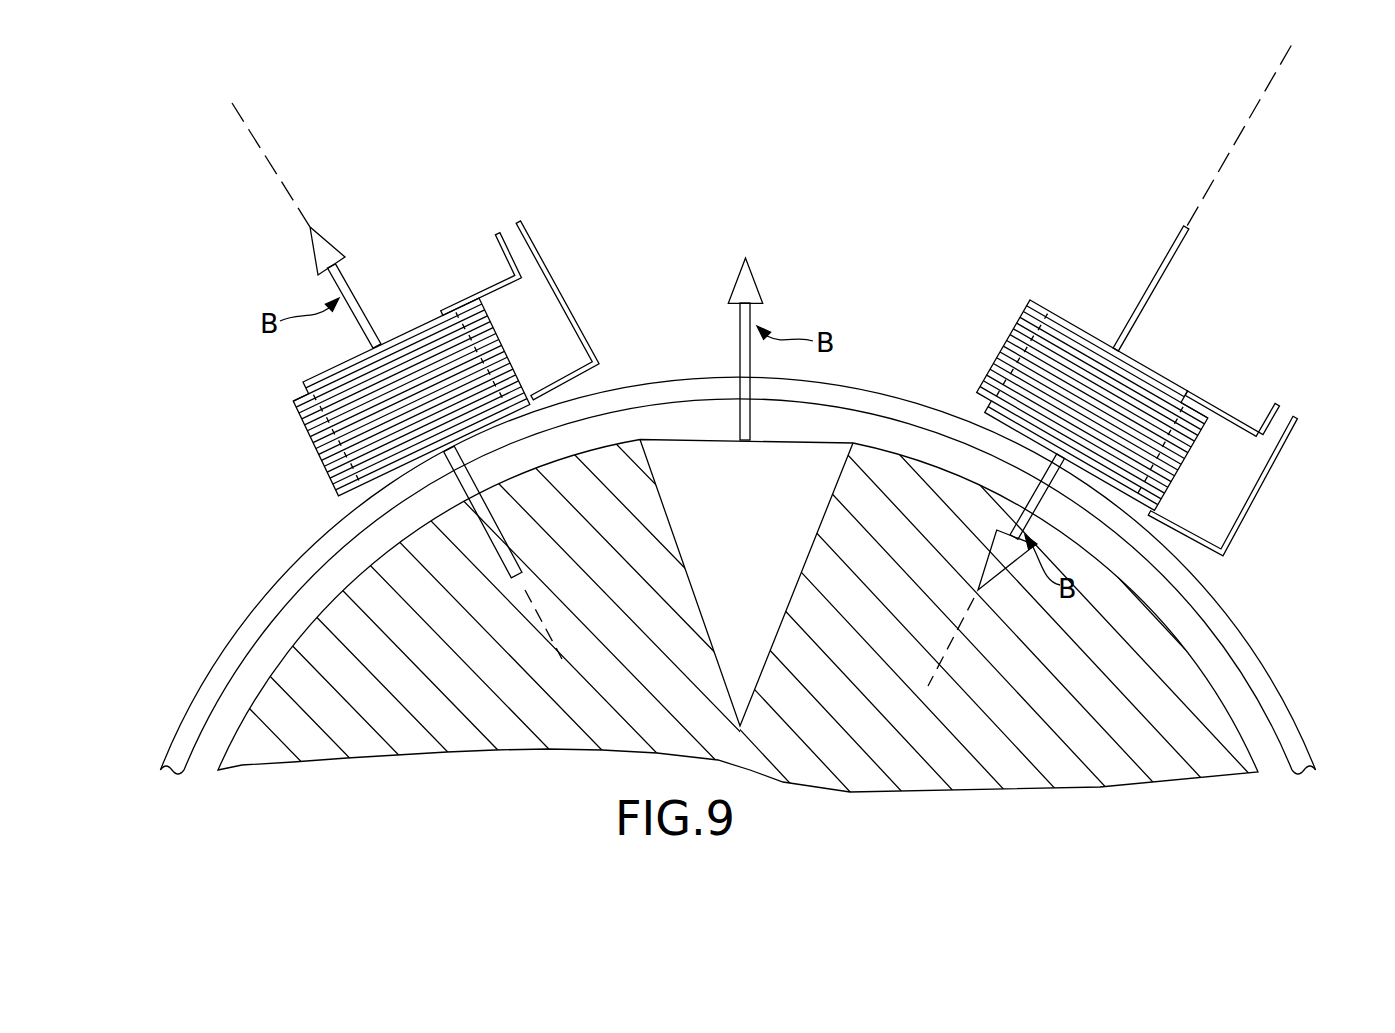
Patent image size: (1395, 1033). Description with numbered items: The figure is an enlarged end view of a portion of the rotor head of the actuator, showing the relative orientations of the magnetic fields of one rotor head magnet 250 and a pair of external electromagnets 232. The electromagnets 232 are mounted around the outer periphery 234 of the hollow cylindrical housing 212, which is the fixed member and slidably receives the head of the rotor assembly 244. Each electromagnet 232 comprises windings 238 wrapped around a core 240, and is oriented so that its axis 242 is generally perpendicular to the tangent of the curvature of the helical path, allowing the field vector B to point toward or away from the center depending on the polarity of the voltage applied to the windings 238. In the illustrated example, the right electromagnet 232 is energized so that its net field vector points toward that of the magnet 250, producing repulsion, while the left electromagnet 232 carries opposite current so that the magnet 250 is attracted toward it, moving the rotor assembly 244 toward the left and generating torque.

The housing 212 is at (697, 598).
The electromagnet 232 is at (755, 399).
The outer periphery 234 is at (1240, 635).
The windings 238 is at (509, 358).
The core 240 is at (440, 308).
The axis 242 is at (258, 148).
The rotor assembly 244 is at (1266, 743).
The magnet 250 is at (794, 641).